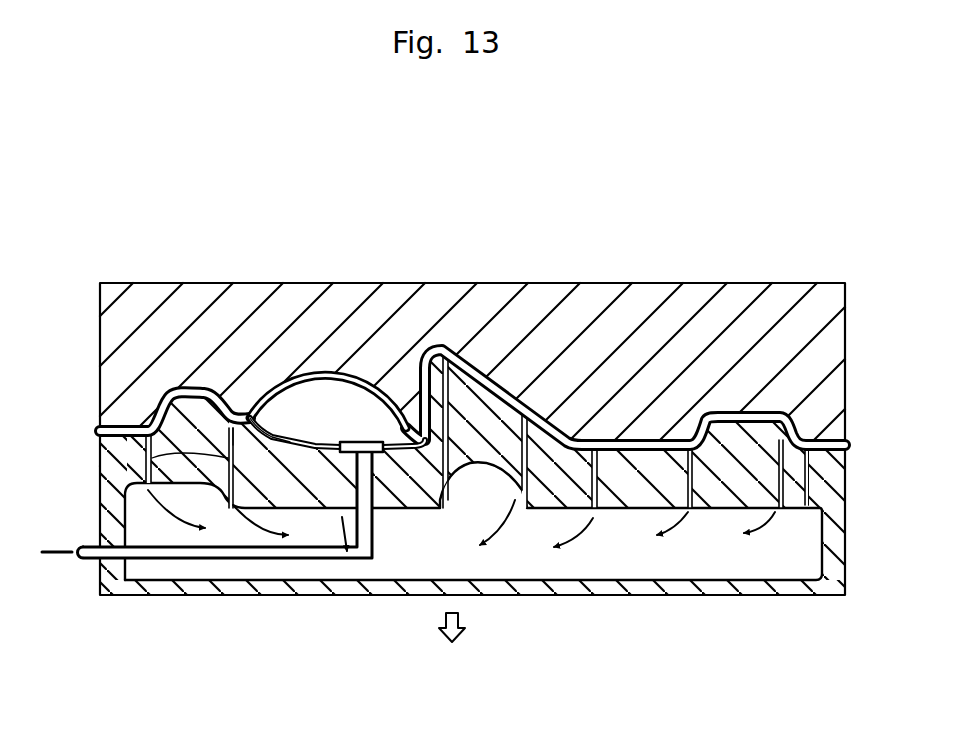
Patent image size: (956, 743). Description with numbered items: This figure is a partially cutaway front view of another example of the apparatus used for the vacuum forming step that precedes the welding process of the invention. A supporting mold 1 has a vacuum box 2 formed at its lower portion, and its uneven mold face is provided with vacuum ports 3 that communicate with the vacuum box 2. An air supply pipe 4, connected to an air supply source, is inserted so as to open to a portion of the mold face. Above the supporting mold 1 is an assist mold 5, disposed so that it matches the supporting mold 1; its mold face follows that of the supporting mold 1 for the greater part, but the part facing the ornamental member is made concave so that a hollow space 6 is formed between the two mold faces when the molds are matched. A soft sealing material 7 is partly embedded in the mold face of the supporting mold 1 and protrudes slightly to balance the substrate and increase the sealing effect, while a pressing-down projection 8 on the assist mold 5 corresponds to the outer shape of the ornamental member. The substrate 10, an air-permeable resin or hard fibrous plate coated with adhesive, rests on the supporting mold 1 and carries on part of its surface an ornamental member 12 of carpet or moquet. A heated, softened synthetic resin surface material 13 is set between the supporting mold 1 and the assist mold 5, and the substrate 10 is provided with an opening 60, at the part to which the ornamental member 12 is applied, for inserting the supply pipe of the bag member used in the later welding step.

The supporting mold 1 is at (578, 583).
The vacuum box 2 is at (658, 562).
The vacuum ports 3 is at (80, 462).
The air supply pipe 4 is at (203, 560).
The assist mold 5 is at (402, 292).
The hollow space 6 is at (323, 398).
The soft sealing material 7 is at (258, 450).
The pressing-down projection 8 is at (245, 405).
The substrate 10 is at (622, 510).
The ornamental member 12 is at (291, 418).
The synthetic resin surface material 13 is at (358, 374).
The opening 60 is at (340, 453).